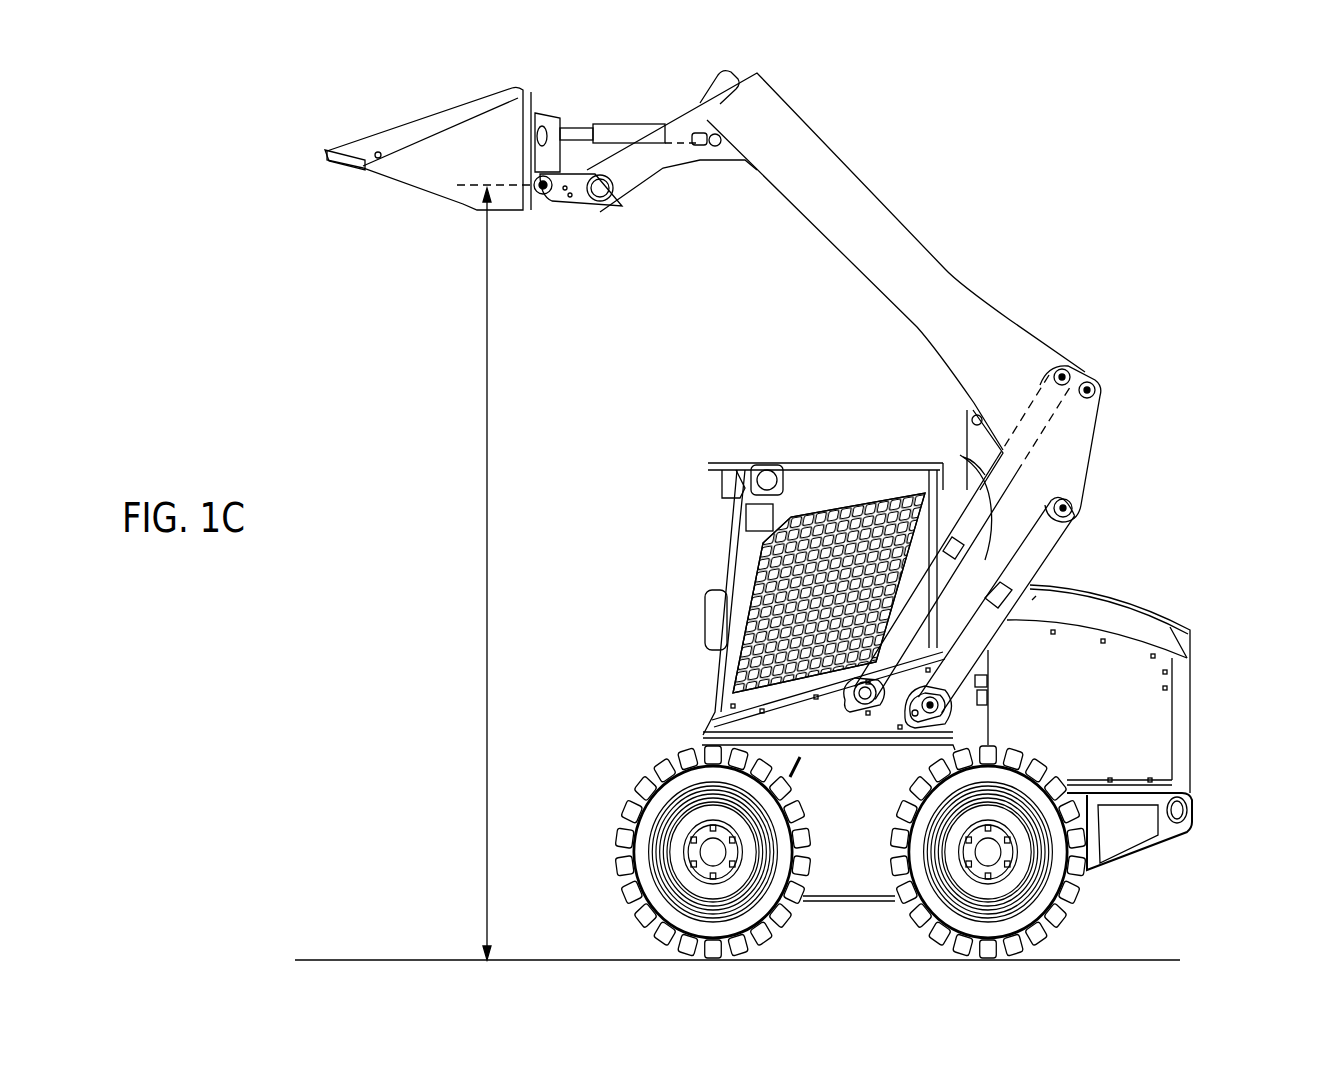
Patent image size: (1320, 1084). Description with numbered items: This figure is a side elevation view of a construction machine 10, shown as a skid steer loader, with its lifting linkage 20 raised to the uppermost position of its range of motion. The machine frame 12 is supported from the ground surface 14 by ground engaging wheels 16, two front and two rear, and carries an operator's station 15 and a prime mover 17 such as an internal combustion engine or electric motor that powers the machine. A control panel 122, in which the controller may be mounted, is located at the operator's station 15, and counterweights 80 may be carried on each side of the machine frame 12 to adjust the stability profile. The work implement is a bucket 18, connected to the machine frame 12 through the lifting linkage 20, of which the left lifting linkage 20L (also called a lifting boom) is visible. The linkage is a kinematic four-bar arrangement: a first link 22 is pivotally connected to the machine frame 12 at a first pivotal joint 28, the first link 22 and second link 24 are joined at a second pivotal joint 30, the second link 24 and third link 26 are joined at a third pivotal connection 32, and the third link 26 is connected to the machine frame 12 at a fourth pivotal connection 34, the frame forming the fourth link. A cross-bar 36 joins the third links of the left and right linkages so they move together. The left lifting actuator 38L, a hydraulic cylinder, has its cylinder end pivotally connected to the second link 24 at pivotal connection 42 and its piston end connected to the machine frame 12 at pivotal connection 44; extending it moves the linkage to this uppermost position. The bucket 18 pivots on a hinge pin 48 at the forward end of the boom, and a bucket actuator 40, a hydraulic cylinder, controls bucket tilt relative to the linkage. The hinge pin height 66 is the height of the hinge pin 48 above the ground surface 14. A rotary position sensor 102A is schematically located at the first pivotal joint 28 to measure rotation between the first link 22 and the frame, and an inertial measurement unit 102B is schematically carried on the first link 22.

The construction machine 10 is at (1024, 136).
The machine frame 12 is at (857, 861).
The ground surface 14 is at (340, 958).
The operator's station 15 is at (735, 548).
The ground engaging wheels 16 is at (620, 855).
The prime mover 17 is at (1135, 725).
The bucket 18 is at (430, 168).
The lifting linkage 20 is at (1118, 390).
The left lifting linkage 20L is at (912, 220).
The first link 22 is at (1030, 565).
The second link 24 is at (1090, 446).
The third link 26 is at (967, 422).
The first pivotal joint 28 is at (948, 706).
The second pivotal joint 30 is at (1075, 508).
The third pivotal connection 32 is at (1090, 381).
The fourth pivotal connection 34 is at (963, 457).
The cross-bar 36 is at (972, 413).
The left lifting actuator 38L is at (933, 487).
The bucket actuator 40 is at (608, 130).
The pivotal connection 42 is at (1066, 368).
The pivotal connection 44 is at (850, 706).
The hinge pin 48 is at (552, 200).
The hinge pin height 66 is at (488, 610).
The counterweights 80 is at (1117, 827).
The rotary position sensor 102A is at (943, 717).
The inertial measurement unit 102B is at (1032, 603).
The control panel 122 is at (738, 511).